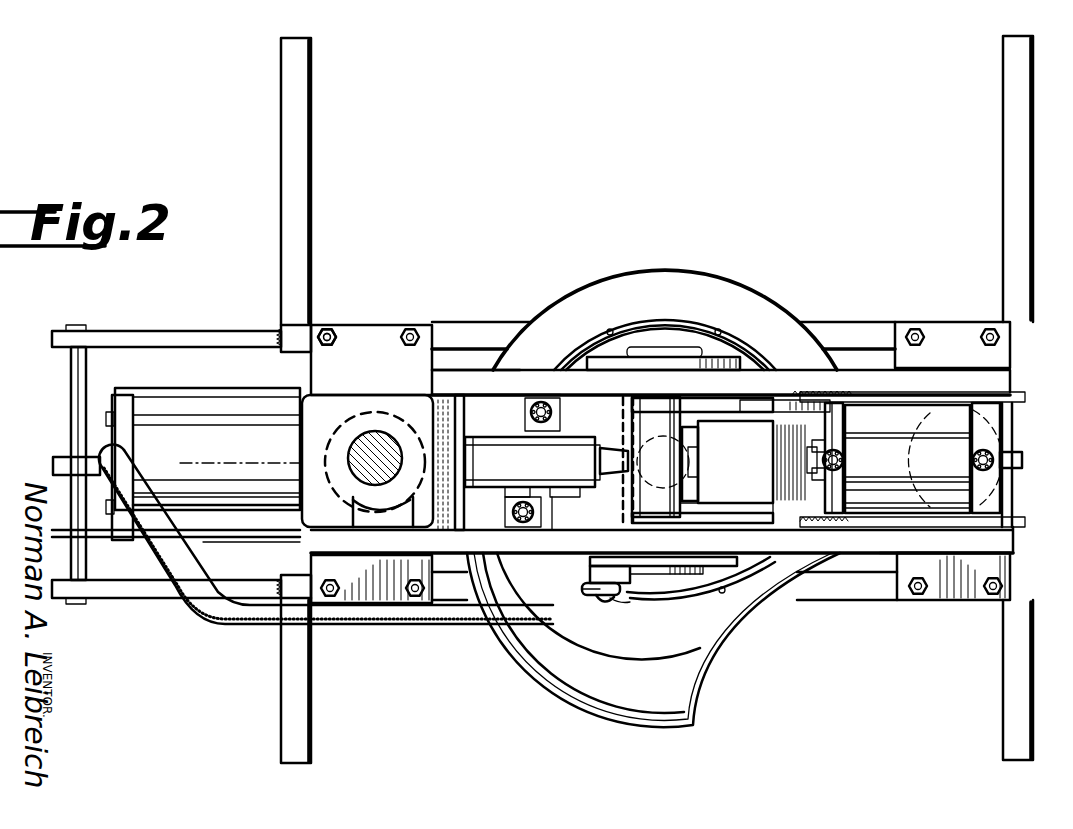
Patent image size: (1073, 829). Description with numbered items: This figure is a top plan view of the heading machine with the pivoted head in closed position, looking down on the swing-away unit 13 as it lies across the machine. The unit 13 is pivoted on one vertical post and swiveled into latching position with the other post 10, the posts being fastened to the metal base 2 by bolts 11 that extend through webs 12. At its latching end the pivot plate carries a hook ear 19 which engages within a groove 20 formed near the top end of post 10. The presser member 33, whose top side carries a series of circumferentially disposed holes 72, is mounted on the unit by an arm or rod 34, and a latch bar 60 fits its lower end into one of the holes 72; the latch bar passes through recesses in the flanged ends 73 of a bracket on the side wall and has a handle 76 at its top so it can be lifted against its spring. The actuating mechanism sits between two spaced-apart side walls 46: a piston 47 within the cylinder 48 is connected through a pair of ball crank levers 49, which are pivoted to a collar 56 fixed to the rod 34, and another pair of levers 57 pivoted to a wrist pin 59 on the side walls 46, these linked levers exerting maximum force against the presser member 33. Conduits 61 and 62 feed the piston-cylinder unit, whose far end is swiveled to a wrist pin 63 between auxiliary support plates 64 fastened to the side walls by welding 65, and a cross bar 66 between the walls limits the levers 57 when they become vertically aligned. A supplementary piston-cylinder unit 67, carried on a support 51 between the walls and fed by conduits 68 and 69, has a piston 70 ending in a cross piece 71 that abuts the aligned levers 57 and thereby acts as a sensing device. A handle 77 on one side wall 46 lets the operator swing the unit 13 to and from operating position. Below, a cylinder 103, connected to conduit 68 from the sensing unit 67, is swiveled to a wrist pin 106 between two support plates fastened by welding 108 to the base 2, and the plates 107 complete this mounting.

The metal base 2 is at (860, 330).
The vertical post 10 is at (378, 410).
The bolts 11 is at (330, 332).
The webs 12 is at (380, 330).
The swing-away unit 13 is at (488, 368).
The hook ear 19 is at (300, 447).
The groove 20 is at (362, 515).
The presser member 33 is at (726, 297).
The arm or rod 34 is at (692, 461).
The side walls 46 is at (530, 385).
The piston 47 is at (770, 470).
The cylinder 48 is at (897, 425).
The ball crank levers 49 is at (745, 405).
The support 51 is at (498, 428).
The collar 56 is at (700, 478).
The levers 57 is at (718, 405).
The wrist pin 59 is at (662, 430).
The latch bar 60 is at (630, 604).
The conduit 61 is at (845, 456).
The conduit 62 is at (1005, 448).
The wrist pin 63 is at (1013, 492).
The auxiliary support plates 64 is at (958, 388).
The welding 65 is at (833, 395).
The cross bar 66 is at (585, 545).
The supplementary piston-cylinder unit 67 is at (532, 483).
The conduit 68 is at (518, 524).
The conduit 69 is at (555, 395).
The piston 70 is at (608, 455).
The cross piece 71 is at (623, 510).
The holes 72 is at (607, 333).
The flanged ends 73 is at (612, 603).
The handle 76 is at (596, 596).
The handle 77 is at (522, 675).
The cylinder 103 is at (210, 405).
The wrist pin 106 is at (70, 372).
The arm 107 is at (194, 332).
The welding 108 is at (280, 322).